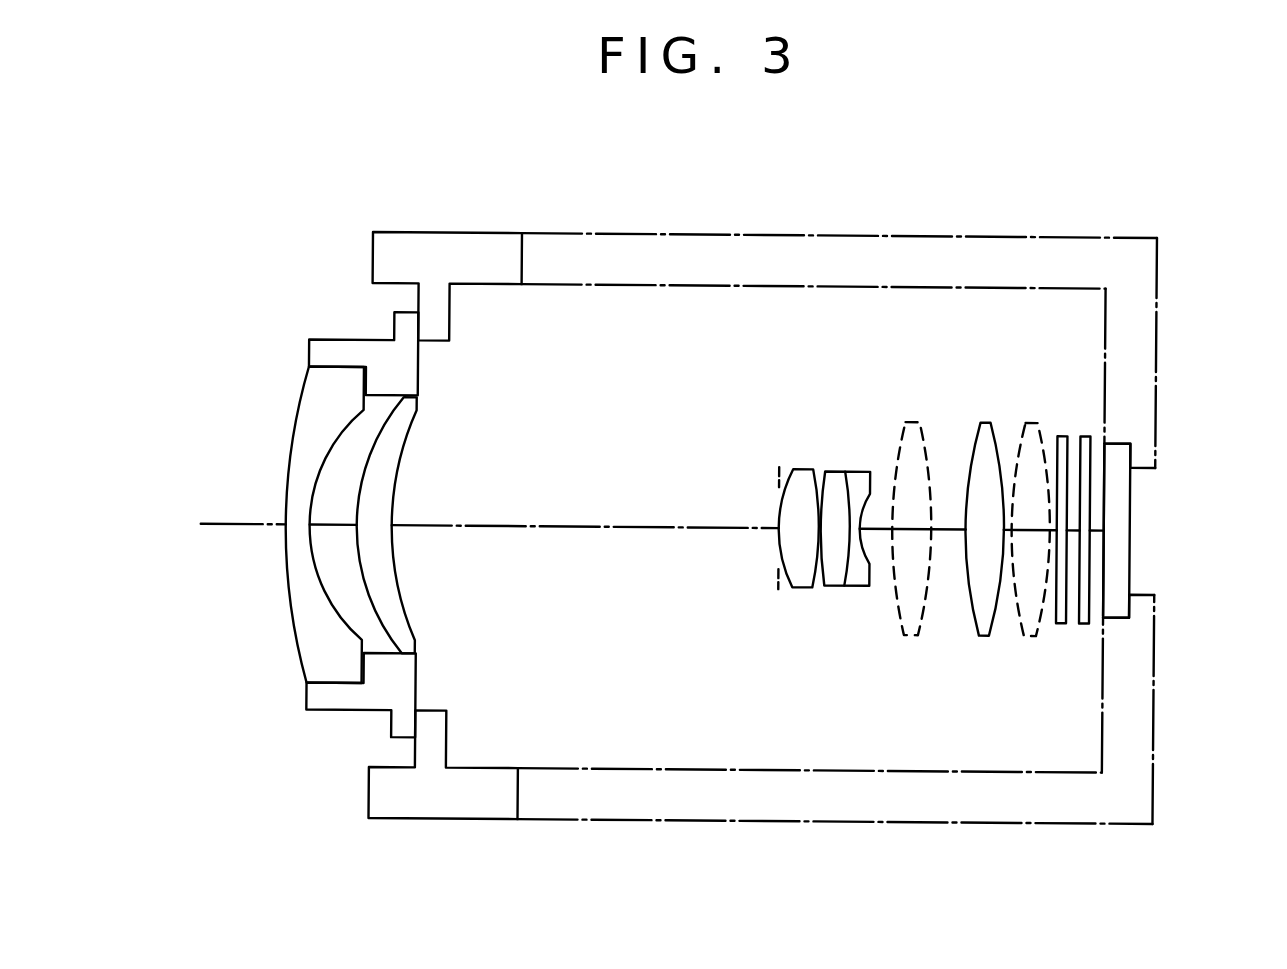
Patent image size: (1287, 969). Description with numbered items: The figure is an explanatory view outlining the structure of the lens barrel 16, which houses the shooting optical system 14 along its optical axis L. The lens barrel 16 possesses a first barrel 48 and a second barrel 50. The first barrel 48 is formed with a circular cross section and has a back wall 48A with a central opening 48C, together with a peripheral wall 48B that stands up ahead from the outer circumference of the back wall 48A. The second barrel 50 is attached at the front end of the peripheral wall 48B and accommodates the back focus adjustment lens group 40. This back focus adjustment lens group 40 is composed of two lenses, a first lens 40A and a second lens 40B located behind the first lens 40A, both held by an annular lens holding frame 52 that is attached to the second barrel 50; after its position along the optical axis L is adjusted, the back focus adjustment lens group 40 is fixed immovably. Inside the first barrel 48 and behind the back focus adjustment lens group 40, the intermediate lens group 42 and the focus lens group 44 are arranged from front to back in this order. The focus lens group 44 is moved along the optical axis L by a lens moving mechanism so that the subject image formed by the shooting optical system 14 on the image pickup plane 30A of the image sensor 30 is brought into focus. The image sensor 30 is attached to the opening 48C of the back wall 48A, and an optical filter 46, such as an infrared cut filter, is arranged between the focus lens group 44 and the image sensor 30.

The shooting optical system 14 is at (196, 441).
The lens barrel 16 is at (685, 203).
The image sensor 30 is at (1182, 531).
The image pickup plane 30A is at (1106, 567).
The back focus adjustment lens group 40 is at (288, 536).
The first lens 40A is at (296, 624).
The second lens 40B is at (372, 598).
The intermediate lens group 42 is at (844, 602).
The focus lens group 44 is at (984, 632).
The optical filter 46 is at (1064, 619).
The first barrel 48 is at (895, 494).
The back wall 48A is at (1106, 306).
The peripheral wall 48B is at (1073, 283).
The central opening 48C is at (1115, 441).
The second barrel 50 is at (470, 232).
The lens holding frame 52 is at (330, 340).
The optical axis L is at (237, 523).